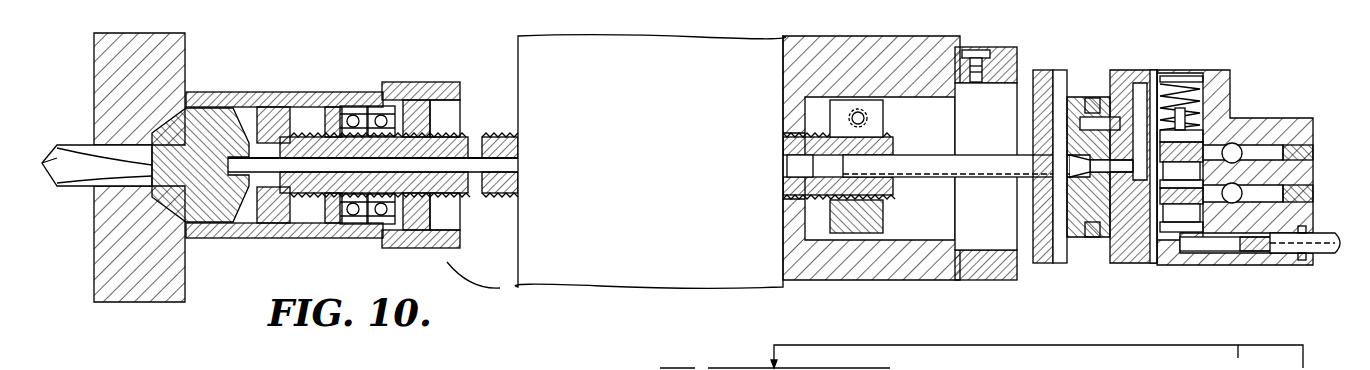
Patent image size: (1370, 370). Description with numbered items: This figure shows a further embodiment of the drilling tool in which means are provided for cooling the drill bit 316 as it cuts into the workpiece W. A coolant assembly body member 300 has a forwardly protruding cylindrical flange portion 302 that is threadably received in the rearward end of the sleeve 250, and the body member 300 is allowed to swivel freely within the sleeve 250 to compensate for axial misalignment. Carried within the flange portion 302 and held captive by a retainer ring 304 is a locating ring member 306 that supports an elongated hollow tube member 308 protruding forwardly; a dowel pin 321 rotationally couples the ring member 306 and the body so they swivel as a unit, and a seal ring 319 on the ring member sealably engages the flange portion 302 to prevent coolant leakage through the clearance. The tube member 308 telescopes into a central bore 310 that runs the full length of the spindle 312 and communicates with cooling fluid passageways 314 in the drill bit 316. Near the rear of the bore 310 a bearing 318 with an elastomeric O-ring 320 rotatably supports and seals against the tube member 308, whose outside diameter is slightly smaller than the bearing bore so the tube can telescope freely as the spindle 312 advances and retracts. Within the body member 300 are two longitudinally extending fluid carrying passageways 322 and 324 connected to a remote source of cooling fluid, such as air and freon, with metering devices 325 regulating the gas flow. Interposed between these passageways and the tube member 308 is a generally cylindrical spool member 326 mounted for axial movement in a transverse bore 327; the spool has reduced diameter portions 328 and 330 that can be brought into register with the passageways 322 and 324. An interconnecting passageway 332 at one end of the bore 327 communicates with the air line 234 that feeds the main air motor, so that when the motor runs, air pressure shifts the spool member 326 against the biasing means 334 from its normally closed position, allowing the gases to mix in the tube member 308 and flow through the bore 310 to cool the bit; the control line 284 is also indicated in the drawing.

The workpiece W is at (192, 52).
The cooling fluid passageways 314 is at (200, 128).
The drill bit 316 is at (222, 198).
The spindle 312 is at (486, 138).
The central bore 310 is at (787, 167).
The bearing 318 is at (872, 183).
The elastomeric O-ring 320 is at (868, 205).
The hollow tube member 308 is at (1045, 165).
The locating ring member 306 is at (1072, 193).
The retainer ring 304 is at (1073, 232).
The sleeve 250 is at (1072, 265).
The cylindrical flange portion 302 is at (1097, 248).
The seal ring 319 is at (1093, 98).
The dowel pin 321 is at (1117, 118).
The bore 327 is at (1155, 215).
The coolant assembly body member 300 is at (1167, 262).
The biasing means 334 is at (1185, 92).
The spool member 326 is at (1236, 143).
The metering devices 325 is at (1262, 190).
The fluid carrying passageway 322 is at (1270, 148).
The fluid carrying passageway 324 is at (1268, 195).
The reduced diameter portion 328 is at (1190, 173).
The reduced diameter portion 330 is at (1192, 214).
The interconnecting passageway 332 is at (1227, 252).
The air line 234 is at (1330, 255).
The control line 284 is at (722, 368).